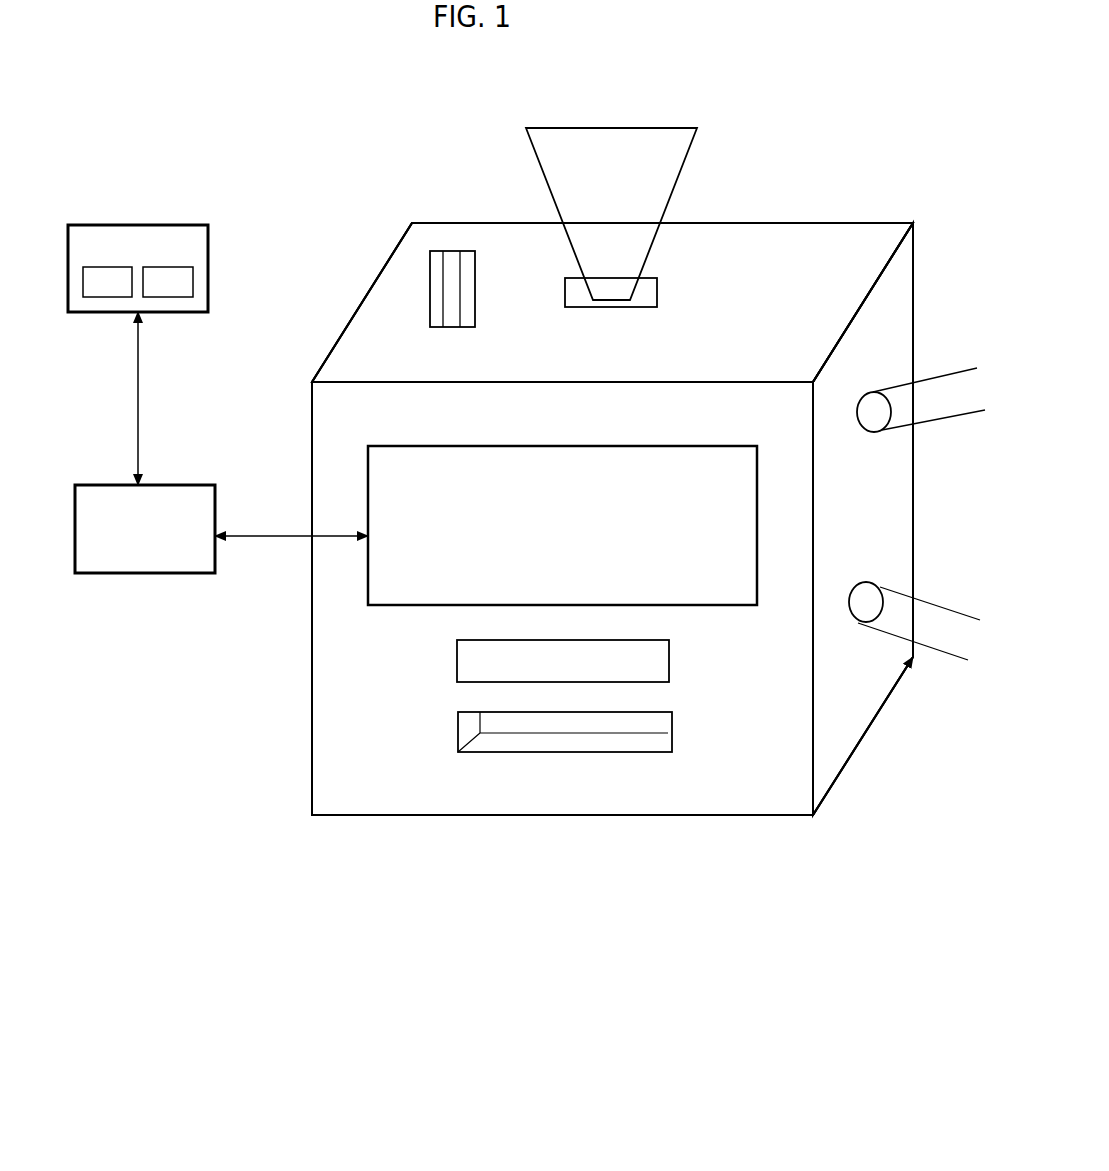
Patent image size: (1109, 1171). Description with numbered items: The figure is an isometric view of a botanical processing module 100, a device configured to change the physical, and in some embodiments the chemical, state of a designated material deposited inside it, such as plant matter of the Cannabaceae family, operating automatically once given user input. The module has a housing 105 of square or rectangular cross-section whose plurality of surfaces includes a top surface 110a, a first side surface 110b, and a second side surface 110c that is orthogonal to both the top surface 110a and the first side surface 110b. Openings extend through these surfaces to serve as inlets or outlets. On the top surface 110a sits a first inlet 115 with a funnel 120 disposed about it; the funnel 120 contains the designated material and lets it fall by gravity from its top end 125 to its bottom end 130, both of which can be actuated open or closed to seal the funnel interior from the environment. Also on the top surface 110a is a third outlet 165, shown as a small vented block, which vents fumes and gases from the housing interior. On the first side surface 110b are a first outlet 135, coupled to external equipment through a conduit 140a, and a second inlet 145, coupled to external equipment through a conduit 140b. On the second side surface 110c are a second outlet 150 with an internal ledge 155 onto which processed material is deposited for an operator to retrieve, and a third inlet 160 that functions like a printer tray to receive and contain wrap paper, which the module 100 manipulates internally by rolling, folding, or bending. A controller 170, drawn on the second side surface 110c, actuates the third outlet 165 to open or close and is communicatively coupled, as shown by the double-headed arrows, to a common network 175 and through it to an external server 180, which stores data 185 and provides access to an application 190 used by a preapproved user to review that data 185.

The botanical processing module 100 is at (473, 863).
The housing 105 is at (773, 818).
The top surface 110a is at (813, 248).
The first side surface 110b is at (890, 357).
The second side surface 110c is at (378, 762).
The first inlet 115 is at (645, 292).
The funnel 120 is at (585, 188).
The top end 125 is at (627, 128).
The bottom end 130 is at (613, 298).
The first outlet 135 is at (866, 597).
The conduit 140a is at (937, 617).
The conduit 140b is at (944, 393).
The second inlet 145 is at (868, 405).
The second outlet 150 is at (610, 722).
The internal ledge 155 is at (518, 742).
The third inlet 160 is at (668, 668).
The third outlet 165 is at (448, 272).
The controller 170 is at (526, 537).
The common network 175 is at (119, 547).
The external server 180 is at (119, 256).
The data 185 is at (94, 292).
The application 190 is at (154, 292).